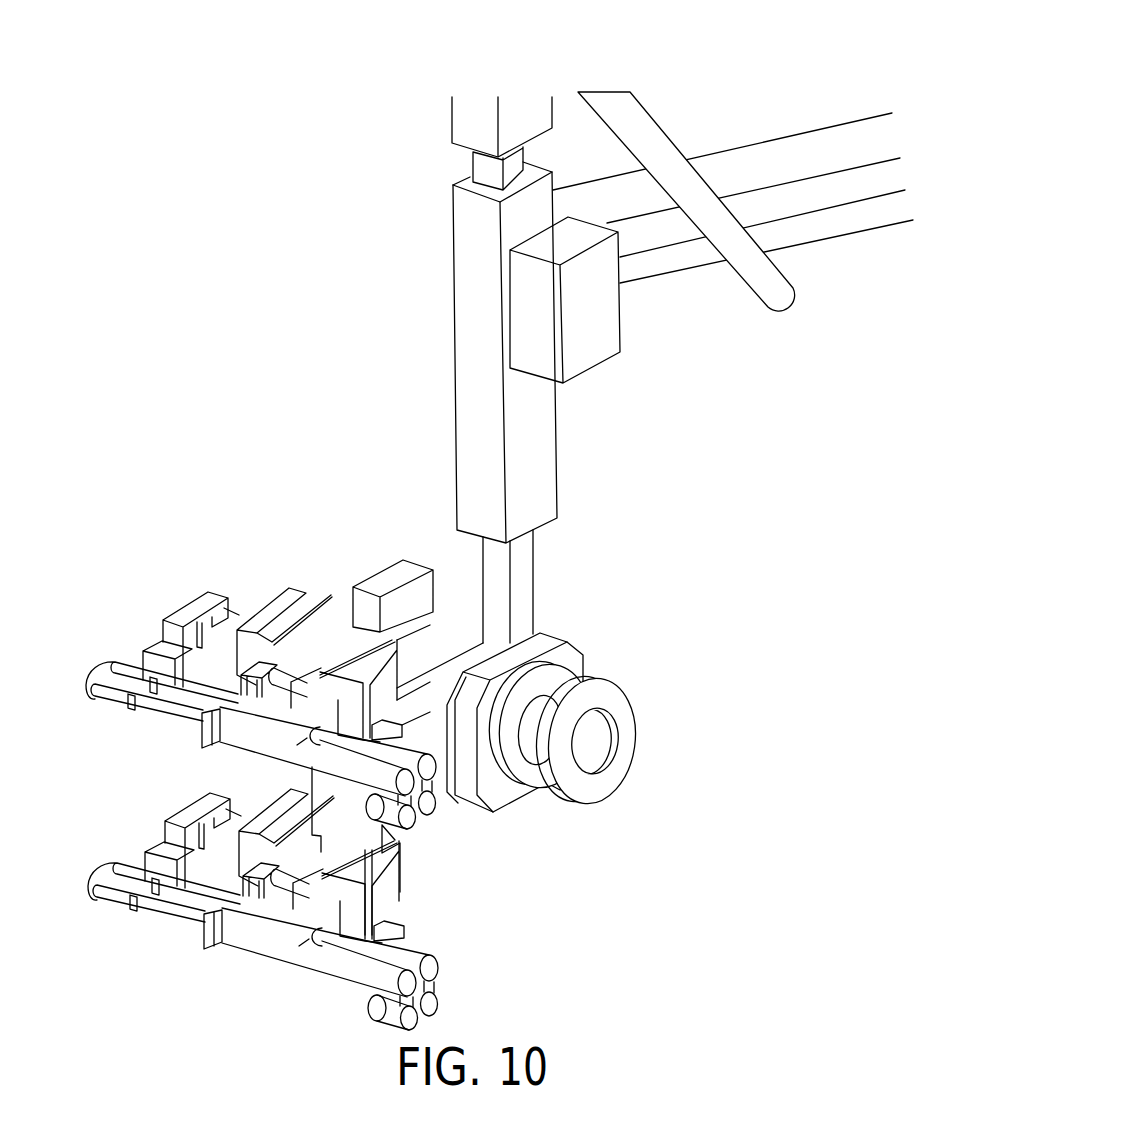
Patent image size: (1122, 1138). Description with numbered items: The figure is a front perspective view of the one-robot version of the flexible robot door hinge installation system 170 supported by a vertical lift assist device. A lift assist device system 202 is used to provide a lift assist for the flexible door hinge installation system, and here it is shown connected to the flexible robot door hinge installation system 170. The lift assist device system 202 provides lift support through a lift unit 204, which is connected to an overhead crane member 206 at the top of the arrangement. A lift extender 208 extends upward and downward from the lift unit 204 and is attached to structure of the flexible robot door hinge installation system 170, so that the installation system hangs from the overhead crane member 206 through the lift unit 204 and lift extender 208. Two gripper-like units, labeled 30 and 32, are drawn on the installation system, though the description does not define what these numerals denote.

The lift assist device system 202 is at (721, 98).
The lift unit 204 is at (468, 337).
The overhead crane member 206 is at (467, 118).
The lift extender 208 is at (523, 585).
The flexible robot door hinge installation system 170 is at (318, 551).
The first gripper 30 is at (87, 694).
The second gripper 32 is at (87, 894).